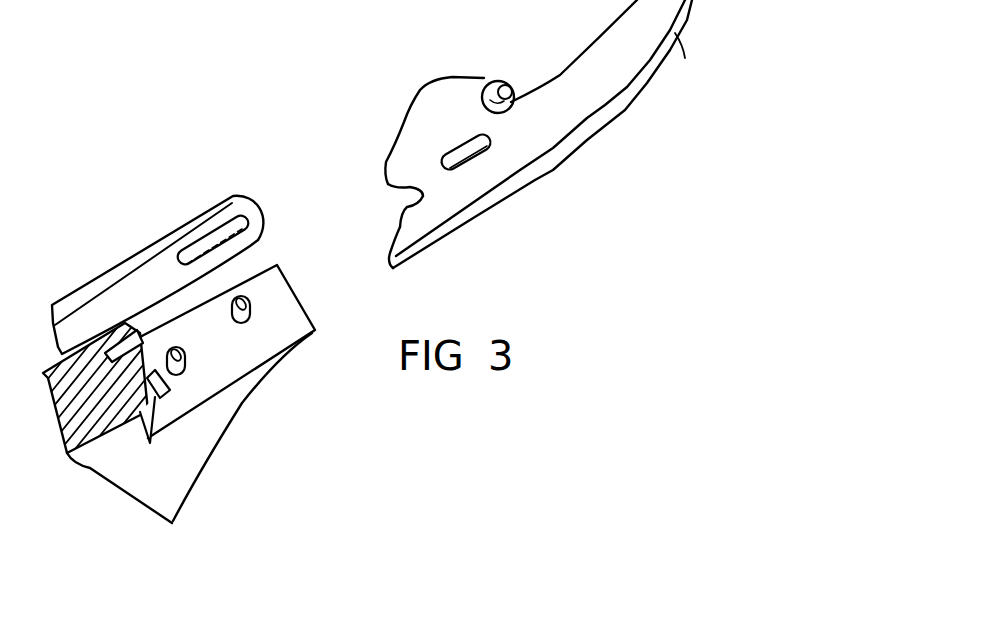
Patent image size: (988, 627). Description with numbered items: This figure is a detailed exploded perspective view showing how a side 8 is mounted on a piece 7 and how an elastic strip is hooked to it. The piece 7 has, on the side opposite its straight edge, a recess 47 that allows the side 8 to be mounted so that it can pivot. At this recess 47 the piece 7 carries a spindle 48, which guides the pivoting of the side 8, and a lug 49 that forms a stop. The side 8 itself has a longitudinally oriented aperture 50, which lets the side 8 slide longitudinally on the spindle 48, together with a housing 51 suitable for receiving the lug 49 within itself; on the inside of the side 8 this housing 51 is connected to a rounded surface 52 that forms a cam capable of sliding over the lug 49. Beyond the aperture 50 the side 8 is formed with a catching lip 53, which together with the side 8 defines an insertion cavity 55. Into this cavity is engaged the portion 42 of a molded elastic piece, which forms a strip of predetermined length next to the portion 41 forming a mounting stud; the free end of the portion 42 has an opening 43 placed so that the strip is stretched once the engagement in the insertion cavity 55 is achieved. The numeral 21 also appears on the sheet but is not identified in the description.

The piece 7 is at (184, 503).
The side 8 is at (576, 159).
The element of adjacent figure 21 is at (96, 13).
The portion forming a mounting stud 41 is at (111, 15).
The portion forming a strip 42 is at (108, 308).
The opening 43 is at (240, 200).
The recess 47 is at (193, 389).
The spindle 48 is at (257, 310).
The lug 49 is at (186, 357).
The aperture 50 is at (482, 157).
The housing 51 is at (415, 198).
The rounded surface 52 is at (390, 186).
The catching lip 53 is at (510, 80).
The insertion cavity 55 is at (503, 84).